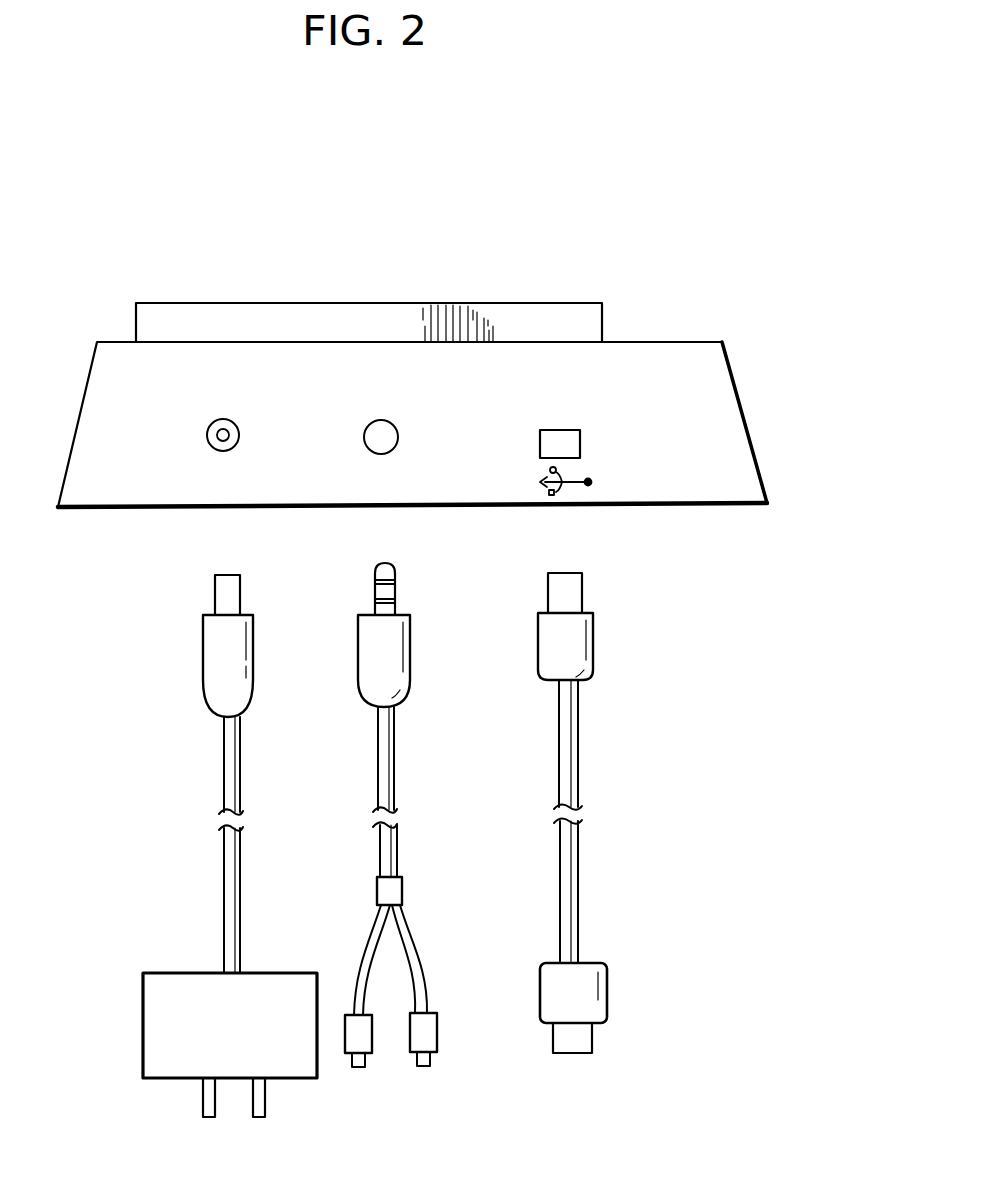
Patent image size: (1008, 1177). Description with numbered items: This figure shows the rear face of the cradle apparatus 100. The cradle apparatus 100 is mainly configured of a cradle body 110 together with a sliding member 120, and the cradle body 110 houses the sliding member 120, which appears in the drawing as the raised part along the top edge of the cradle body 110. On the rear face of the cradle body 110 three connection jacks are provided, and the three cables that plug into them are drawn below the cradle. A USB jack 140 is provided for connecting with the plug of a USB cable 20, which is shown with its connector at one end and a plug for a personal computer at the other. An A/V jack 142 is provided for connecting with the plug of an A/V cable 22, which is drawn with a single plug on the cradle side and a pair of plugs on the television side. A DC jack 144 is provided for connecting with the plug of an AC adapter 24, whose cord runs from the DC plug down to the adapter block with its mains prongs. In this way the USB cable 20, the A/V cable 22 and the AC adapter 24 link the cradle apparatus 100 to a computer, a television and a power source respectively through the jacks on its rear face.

The cradle apparatus 100 is at (560, 276).
The cradle body 110 is at (745, 393).
The sliding member 120 is at (185, 302).
The USB jack 140 is at (582, 443).
The A/V jack 142 is at (398, 432).
The DC jack 144 is at (240, 431).
The USB cable 20 is at (578, 770).
The A/V cable 22 is at (394, 770).
The AC adapter 24 is at (238, 770).